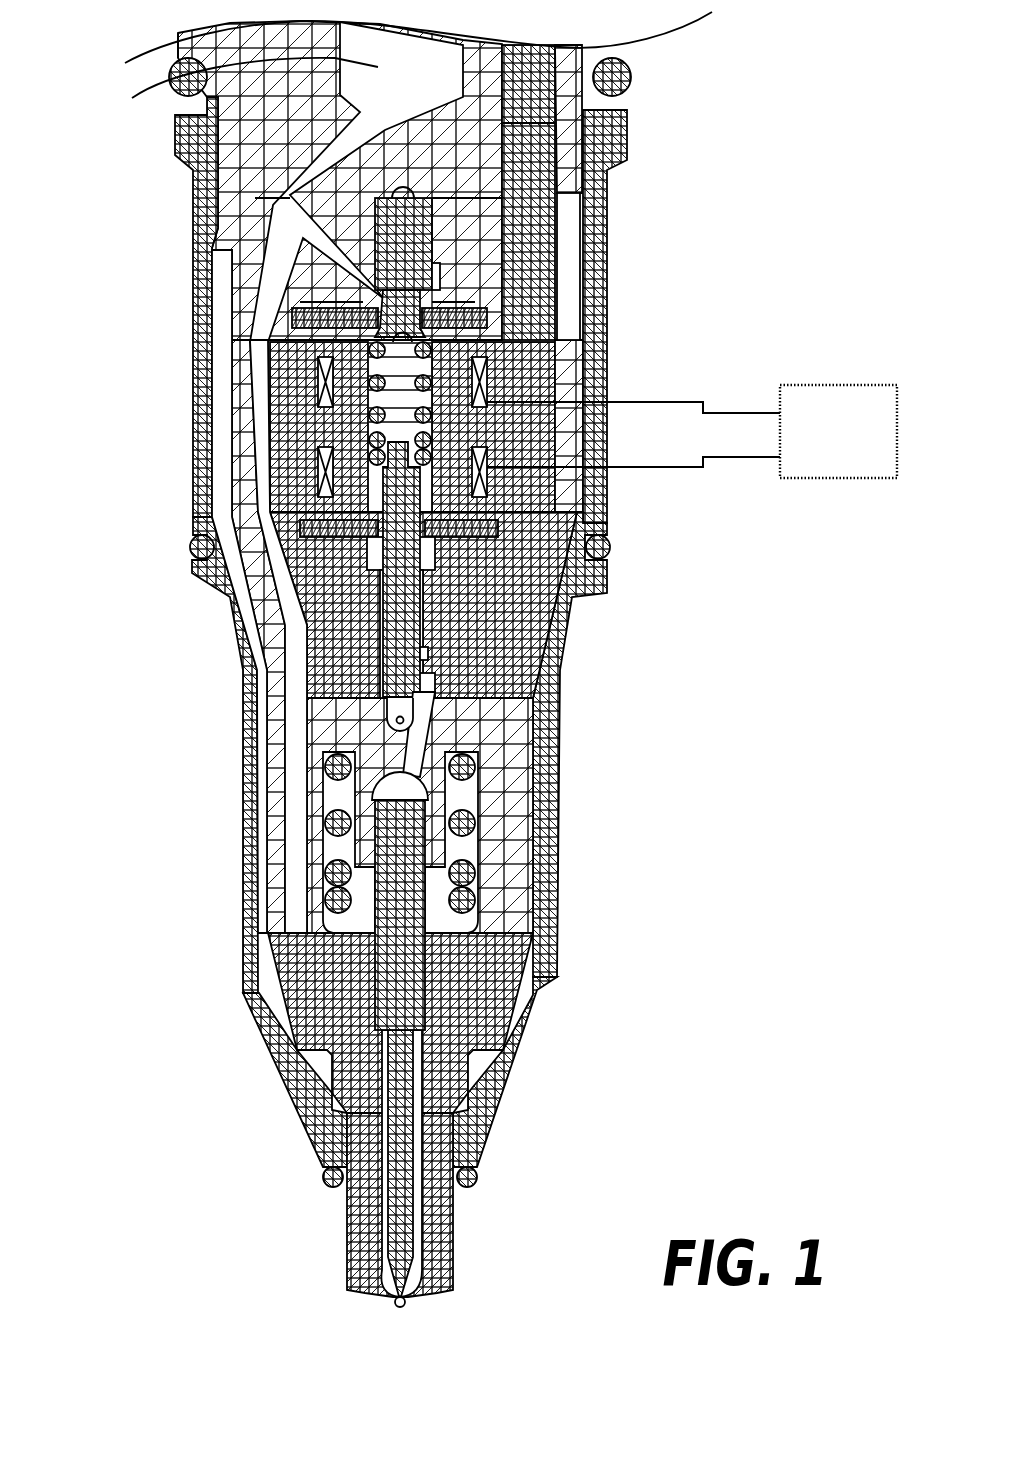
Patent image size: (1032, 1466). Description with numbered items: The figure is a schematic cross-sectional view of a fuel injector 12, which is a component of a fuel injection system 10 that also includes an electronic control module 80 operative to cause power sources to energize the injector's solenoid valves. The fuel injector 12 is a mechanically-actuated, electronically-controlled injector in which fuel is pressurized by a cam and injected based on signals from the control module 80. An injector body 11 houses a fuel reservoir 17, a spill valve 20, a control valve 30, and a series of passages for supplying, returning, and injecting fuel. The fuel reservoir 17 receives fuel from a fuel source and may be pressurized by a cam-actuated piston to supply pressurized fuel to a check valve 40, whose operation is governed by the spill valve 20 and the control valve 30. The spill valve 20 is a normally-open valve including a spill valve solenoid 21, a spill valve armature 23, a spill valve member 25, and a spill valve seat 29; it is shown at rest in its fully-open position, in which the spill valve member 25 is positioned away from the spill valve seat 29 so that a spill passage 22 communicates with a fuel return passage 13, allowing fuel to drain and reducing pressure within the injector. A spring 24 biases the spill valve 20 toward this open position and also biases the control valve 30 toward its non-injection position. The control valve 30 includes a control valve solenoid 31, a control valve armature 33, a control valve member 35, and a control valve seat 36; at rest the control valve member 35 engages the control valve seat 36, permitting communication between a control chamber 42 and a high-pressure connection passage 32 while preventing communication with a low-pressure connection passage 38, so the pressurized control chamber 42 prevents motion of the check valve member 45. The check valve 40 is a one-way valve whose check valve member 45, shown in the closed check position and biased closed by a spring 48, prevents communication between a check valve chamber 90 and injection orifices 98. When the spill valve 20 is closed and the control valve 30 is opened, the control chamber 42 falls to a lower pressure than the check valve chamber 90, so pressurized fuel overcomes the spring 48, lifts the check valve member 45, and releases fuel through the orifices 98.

The fuel injection system 10 is at (770, 152).
The injector body 11 is at (193, 356).
The fuel injector 12 is at (568, 140).
The fuel return passage 13 is at (604, 350).
The fuel reservoir 17 is at (170, 82).
The spill valve 20 is at (482, 284).
The spill valve solenoid 21 is at (318, 388).
The spill passage 22 is at (527, 333).
The spill valve armature 23 is at (388, 263).
The spring 24 is at (370, 428).
The spill valve member 25 is at (385, 230).
The spill valve seat 29 is at (318, 320).
The control valve 30 is at (505, 556).
The control valve solenoid 31 is at (318, 455).
The high-pressure connection passage 32 is at (353, 667).
The control valve armature 33 is at (313, 520).
The control valve member 35 is at (393, 593).
The control valve seat 36 is at (440, 683).
The low-pressure connection passage 38 is at (407, 721).
The check valve 40 is at (510, 862).
The control chamber 42 is at (383, 772).
The check valve member 45 is at (407, 957).
The spring 48 is at (335, 872).
The electronic control module 80 is at (826, 446).
The check valve chamber 90 is at (417, 1058).
The injection orifices 98 is at (392, 1305).